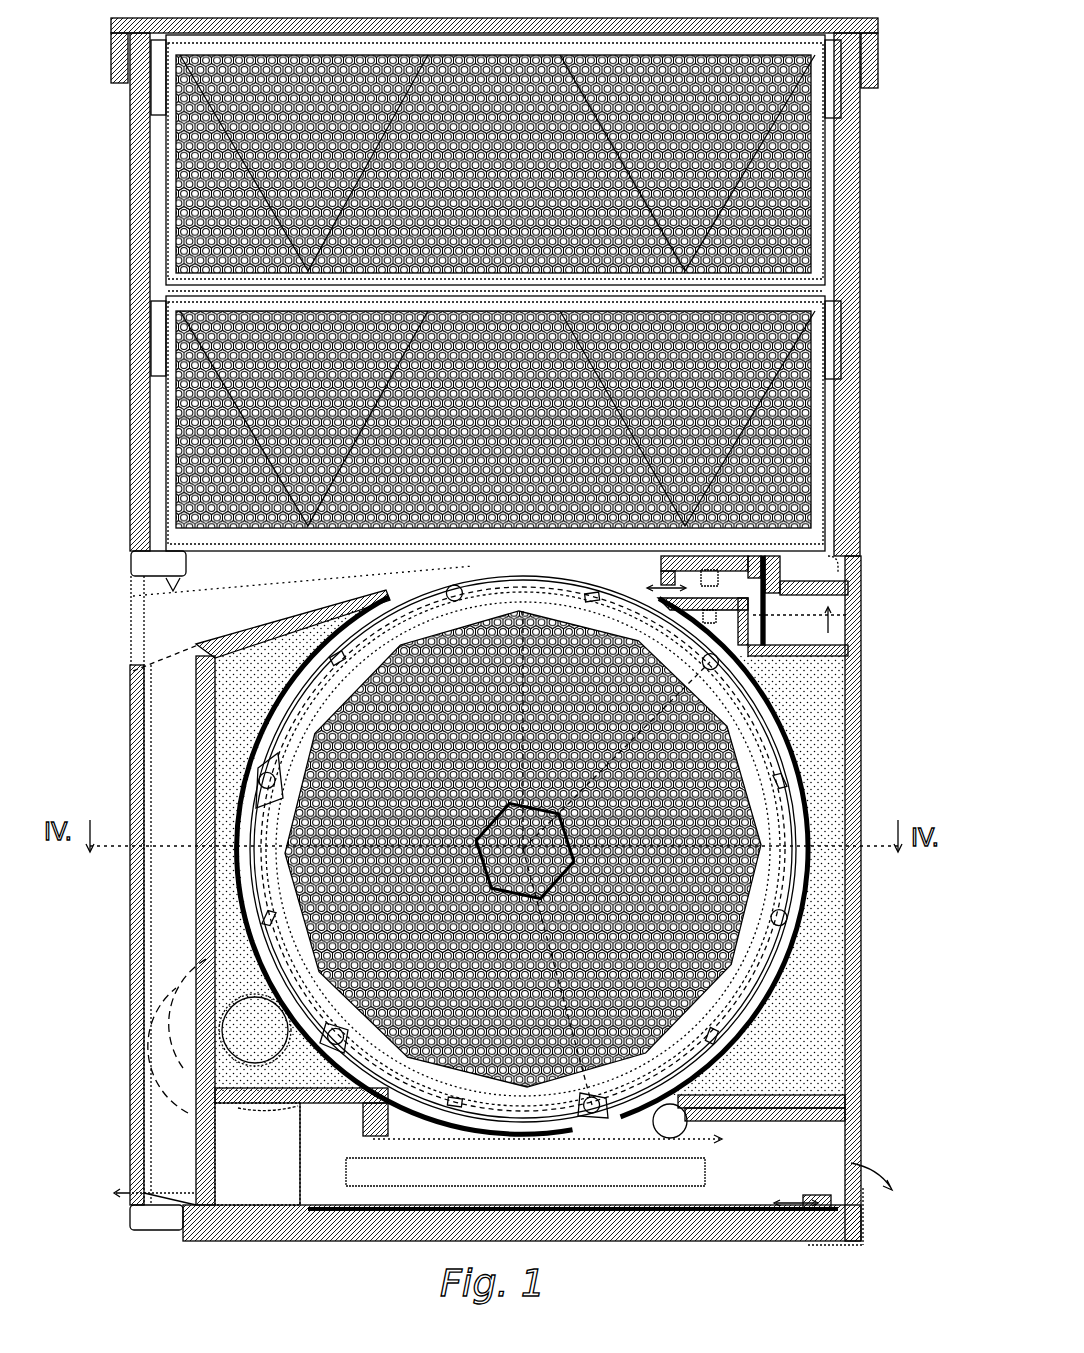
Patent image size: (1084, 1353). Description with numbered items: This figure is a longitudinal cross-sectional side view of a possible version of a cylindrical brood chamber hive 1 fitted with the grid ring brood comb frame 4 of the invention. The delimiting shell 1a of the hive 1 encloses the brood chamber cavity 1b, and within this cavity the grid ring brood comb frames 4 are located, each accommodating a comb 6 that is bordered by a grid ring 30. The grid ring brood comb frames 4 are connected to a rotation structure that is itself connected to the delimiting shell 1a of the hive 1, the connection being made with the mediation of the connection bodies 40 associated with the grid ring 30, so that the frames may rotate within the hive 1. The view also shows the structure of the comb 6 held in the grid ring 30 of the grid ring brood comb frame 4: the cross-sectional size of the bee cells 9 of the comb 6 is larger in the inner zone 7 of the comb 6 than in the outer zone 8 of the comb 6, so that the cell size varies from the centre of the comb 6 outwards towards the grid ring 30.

The hive 1 is at (858, 1232).
The delimiting shell 1a is at (845, 1075).
The brood chamber cavity 1b is at (620, 567).
The grid ring brood comb frame 4 is at (772, 740).
The comb 6 is at (722, 703).
The inner zone 7 is at (580, 860).
The outer zone 8 is at (700, 990).
The bee cells 9 is at (585, 815).
The grid ring 30 is at (785, 822).
The connection bodies 40 is at (742, 658).